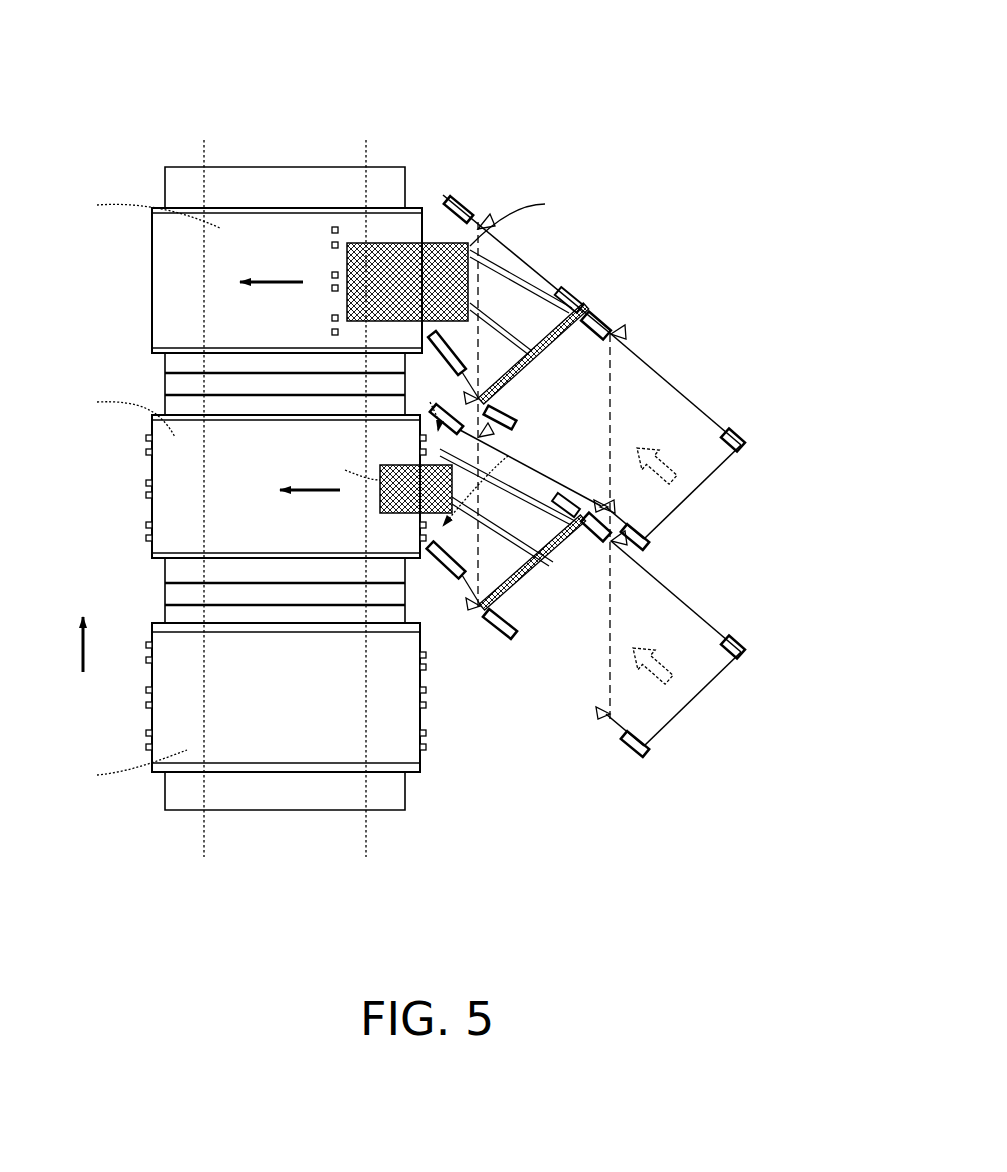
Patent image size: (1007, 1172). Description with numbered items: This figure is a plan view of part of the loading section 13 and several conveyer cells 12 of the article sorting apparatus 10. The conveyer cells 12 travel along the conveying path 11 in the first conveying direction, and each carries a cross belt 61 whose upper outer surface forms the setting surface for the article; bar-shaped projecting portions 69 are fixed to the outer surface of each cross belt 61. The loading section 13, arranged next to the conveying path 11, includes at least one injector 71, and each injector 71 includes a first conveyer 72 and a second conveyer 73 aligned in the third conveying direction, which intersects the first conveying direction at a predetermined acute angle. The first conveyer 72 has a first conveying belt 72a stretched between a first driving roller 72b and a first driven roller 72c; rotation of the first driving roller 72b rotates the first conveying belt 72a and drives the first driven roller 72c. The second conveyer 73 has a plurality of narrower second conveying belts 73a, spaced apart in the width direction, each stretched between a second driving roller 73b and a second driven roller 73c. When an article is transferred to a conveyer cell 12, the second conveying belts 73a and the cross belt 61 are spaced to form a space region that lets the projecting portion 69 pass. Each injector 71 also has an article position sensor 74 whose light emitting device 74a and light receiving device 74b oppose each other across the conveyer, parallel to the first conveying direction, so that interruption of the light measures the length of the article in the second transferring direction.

The article sorting apparatus 10 is at (483, 98).
The conveying path 11 is at (198, 837).
The conveyer cell 12 is at (163, 170).
The loading section 13 is at (662, 204).
The cross belt 61 is at (162, 235).
The projecting portion 69 is at (330, 288).
The injector 71 is at (712, 503).
The first conveyer 72 is at (697, 359).
The first conveying belt 72a is at (682, 405).
The first driving roller 72b is at (746, 436).
The first driven roller 72c is at (600, 318).
The second conveyer 73 is at (568, 261).
The second conveying belt 73a is at (484, 216).
The second driving roller 73b is at (570, 297).
The second driven roller 73c is at (448, 195).
The article position sensor 74 is at (628, 340).
The light emitting device 74a is at (487, 220).
The light receiving device 74b is at (481, 402).